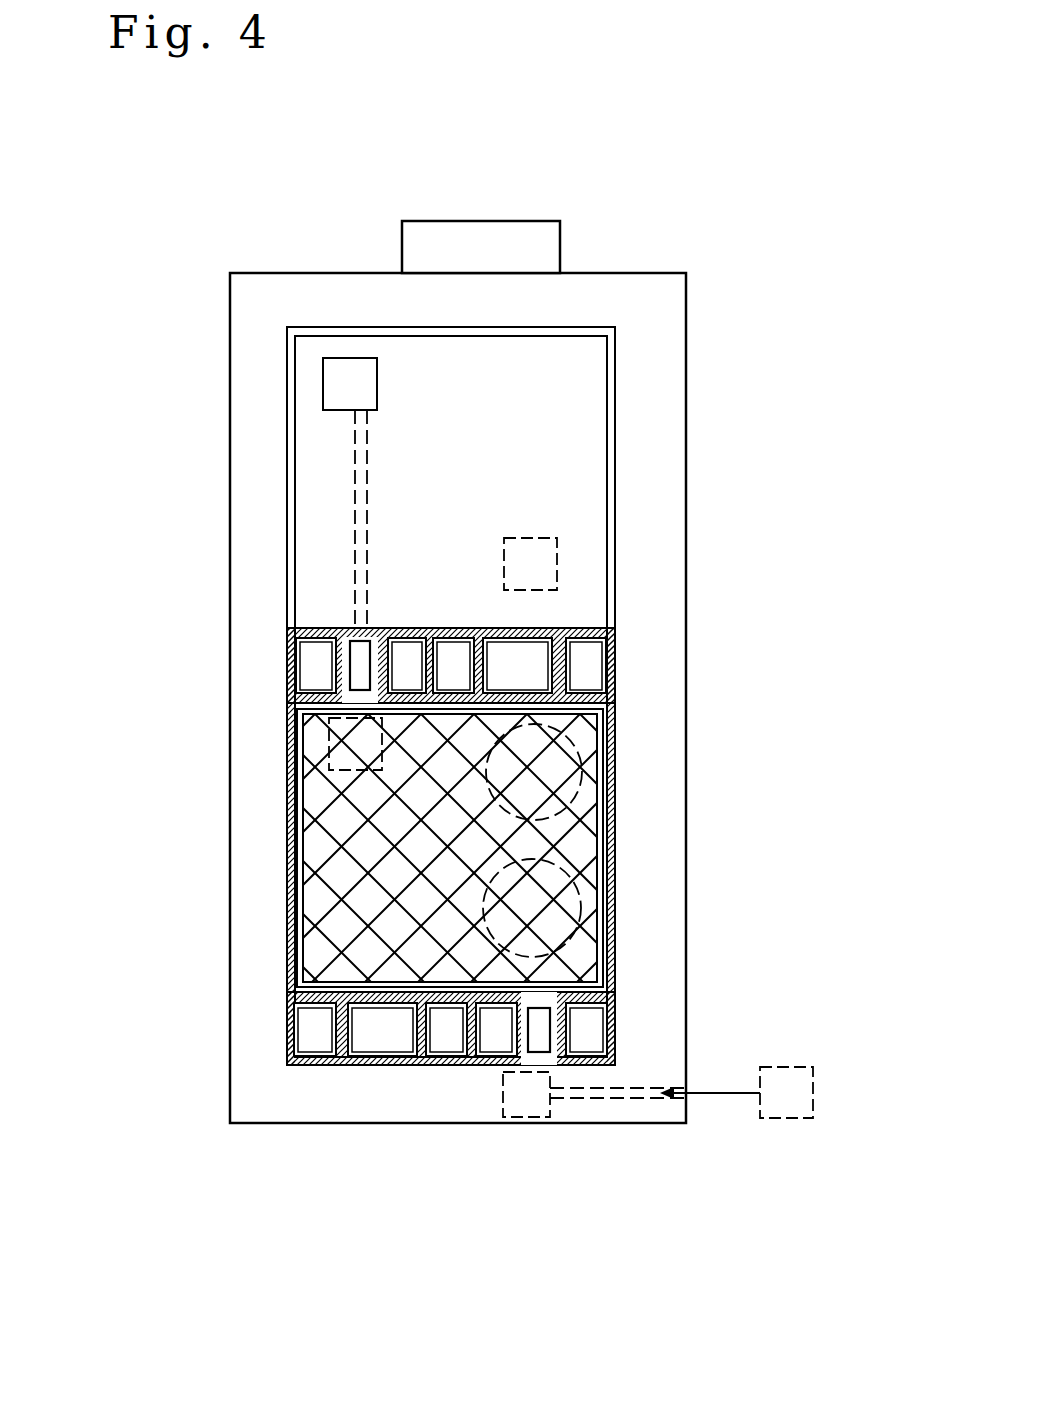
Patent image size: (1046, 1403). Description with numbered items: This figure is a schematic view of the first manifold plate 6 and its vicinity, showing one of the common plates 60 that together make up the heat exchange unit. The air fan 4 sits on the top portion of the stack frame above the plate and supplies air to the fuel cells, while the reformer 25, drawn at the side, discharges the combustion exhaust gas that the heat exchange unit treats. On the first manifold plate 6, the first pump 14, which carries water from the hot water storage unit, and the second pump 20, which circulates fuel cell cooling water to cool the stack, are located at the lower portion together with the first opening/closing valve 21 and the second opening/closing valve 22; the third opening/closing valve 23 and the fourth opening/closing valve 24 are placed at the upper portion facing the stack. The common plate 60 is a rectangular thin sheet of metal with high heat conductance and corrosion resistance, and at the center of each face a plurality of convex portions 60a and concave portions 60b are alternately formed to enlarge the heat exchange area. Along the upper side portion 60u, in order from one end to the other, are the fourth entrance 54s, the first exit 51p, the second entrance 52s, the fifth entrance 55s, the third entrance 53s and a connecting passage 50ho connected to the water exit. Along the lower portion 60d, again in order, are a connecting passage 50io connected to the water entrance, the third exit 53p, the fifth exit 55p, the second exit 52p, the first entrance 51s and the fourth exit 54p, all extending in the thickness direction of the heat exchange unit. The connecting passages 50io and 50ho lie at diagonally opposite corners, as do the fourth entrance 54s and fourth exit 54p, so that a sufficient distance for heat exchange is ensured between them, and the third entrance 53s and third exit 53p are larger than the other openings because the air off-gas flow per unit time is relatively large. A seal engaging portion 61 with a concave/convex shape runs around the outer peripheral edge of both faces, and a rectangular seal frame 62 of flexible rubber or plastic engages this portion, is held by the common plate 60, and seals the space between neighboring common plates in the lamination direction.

The air fan 4 is at (560, 237).
The first manifold plate 6 is at (687, 322).
The first pump 14 is at (575, 735).
The second pump 20 is at (581, 905).
The first opening/closing valve 21 is at (548, 1117).
The second opening/closing valve 22 is at (329, 740).
The third opening/closing valve 23 is at (545, 535).
The fourth opening/closing valve 24 is at (323, 377).
The reformer 25 is at (770, 1118).
The connecting passage 50ho is at (592, 672).
The connecting passage 50io is at (310, 1040).
The first exit 51p is at (360, 653).
The first entrance 51s is at (537, 1043).
The second exit 52p is at (497, 1042).
The second entrance 52s is at (403, 653).
The third exit 53p is at (392, 1038).
The third entrance 53s is at (518, 655).
The fourth exit 54p is at (582, 1042).
The fourth entrance 54s is at (310, 650).
The fifth exit 55p is at (448, 1040).
The fifth entrance 55s is at (453, 650).
The common plate 60 is at (447, 850).
The convex portions 60a is at (322, 805).
The concave portions 60b is at (328, 826).
The upper side portion 60u is at (287, 688).
The lower portion 60d is at (290, 1027).
The seal engaging portion 61 is at (612, 628).
The seal frame 62 is at (617, 707).